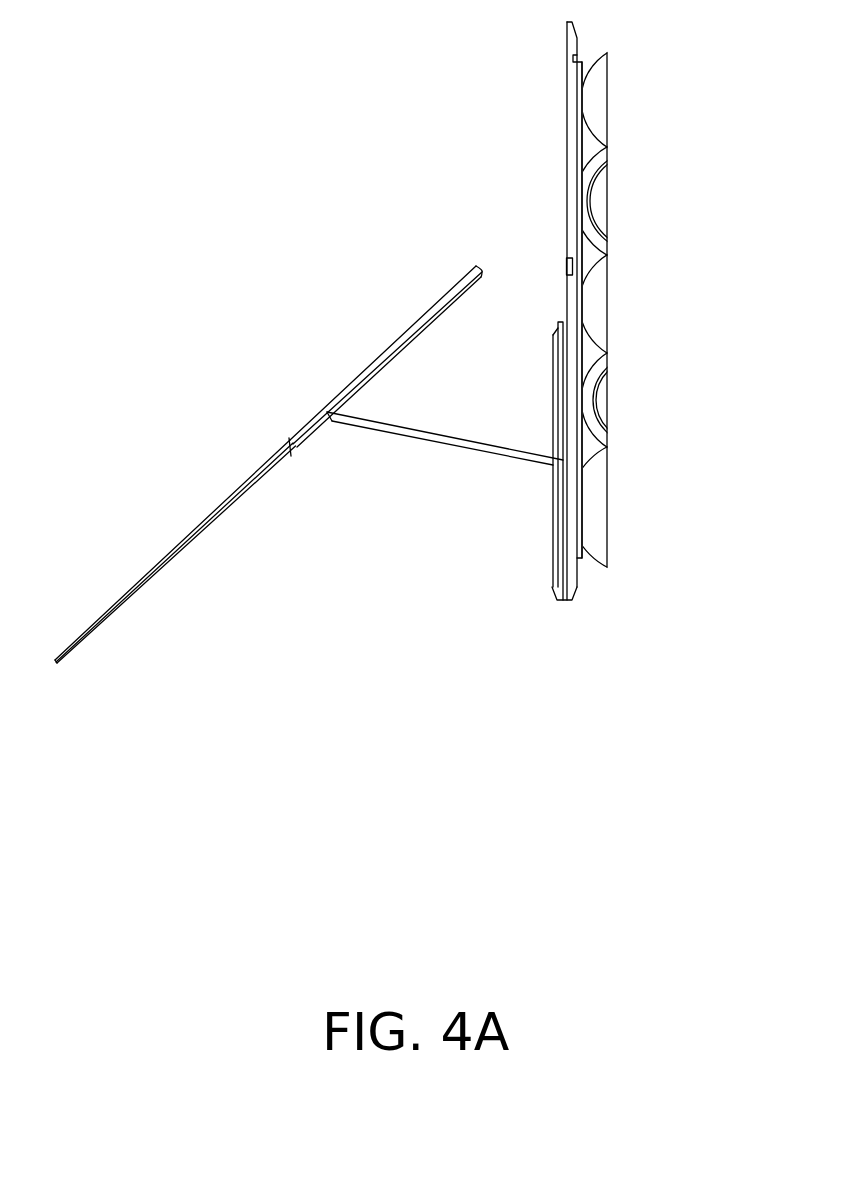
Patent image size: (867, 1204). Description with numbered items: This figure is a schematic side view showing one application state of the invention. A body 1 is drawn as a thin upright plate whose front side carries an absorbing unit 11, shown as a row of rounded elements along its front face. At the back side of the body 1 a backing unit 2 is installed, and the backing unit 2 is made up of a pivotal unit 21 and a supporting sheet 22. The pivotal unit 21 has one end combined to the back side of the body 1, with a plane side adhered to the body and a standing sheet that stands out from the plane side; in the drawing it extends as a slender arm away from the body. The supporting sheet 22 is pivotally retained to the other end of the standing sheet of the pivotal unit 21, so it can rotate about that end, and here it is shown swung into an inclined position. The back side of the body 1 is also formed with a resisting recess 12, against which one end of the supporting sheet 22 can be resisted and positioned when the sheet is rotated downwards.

The body 1 is at (578, 586).
The absorbing unit 11 is at (608, 311).
The resisting recess 12 is at (567, 262).
The backing unit 2 is at (309, 464).
The pivotal unit 21 is at (466, 453).
The supporting sheet 22 is at (170, 545).